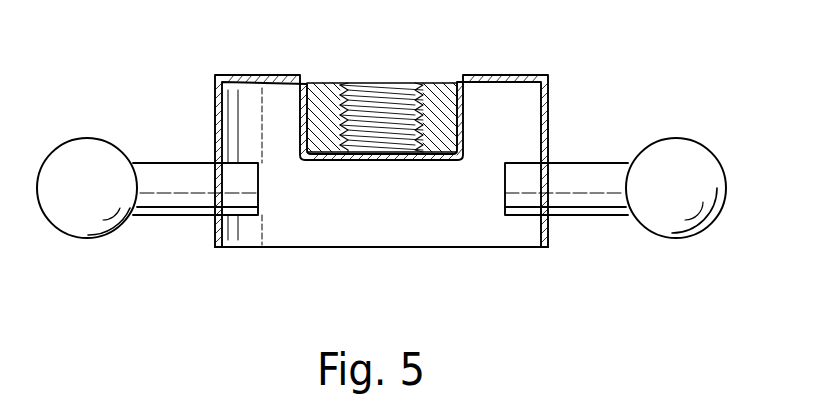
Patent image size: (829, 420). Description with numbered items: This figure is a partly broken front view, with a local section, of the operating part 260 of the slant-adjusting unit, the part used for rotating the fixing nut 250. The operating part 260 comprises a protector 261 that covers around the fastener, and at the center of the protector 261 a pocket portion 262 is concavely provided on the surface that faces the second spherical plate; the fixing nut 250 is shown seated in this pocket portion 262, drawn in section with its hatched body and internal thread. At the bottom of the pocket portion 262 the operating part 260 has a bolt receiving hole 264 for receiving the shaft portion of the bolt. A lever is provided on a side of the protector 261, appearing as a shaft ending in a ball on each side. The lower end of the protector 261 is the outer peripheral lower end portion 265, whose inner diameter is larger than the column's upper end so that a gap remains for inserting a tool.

The fixing nut 250 is at (437, 92).
The operating part 260 is at (588, 87).
The protector 261 is at (538, 76).
The pocket portion 262 is at (300, 113).
The bolt receiving hole 264 is at (387, 155).
The outer peripheral lower end portion 265 is at (318, 247).